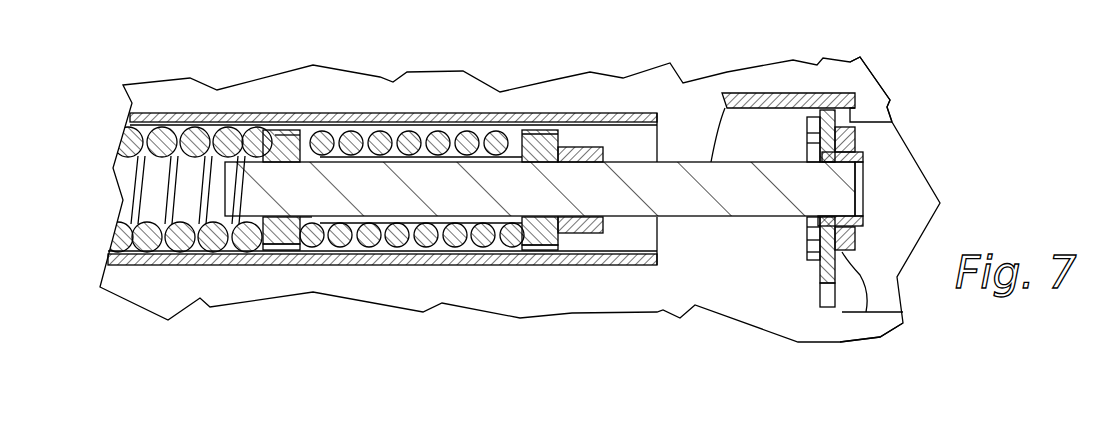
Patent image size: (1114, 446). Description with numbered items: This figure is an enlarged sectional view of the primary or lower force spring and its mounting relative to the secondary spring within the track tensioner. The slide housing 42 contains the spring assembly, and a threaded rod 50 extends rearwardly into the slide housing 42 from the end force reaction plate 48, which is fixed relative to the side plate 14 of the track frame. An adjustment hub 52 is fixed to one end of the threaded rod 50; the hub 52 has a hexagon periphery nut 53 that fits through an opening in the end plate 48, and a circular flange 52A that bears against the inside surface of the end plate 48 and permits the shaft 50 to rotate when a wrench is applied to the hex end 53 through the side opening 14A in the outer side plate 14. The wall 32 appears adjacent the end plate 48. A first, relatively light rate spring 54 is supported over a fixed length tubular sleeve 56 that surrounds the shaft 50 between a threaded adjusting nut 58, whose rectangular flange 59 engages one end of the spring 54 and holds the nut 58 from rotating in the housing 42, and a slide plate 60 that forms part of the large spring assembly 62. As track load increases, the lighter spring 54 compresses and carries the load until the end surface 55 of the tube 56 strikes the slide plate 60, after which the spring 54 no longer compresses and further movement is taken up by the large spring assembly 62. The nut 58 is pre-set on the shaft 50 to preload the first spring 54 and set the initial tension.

The side plate 14 is at (670, 277).
The side opening 14A is at (867, 290).
The mounting wall 32 is at (848, 92).
The slide housing 42 is at (380, 112).
The end force reaction plate 48 is at (820, 275).
The threaded rod 50 is at (662, 183).
The adjustment hub 52 is at (800, 244).
The circular flange 52A is at (807, 148).
The hexagon periphery nut 53 is at (863, 222).
The first spring 54 is at (468, 140).
The end surface 55 is at (313, 217).
The tubular sleeve 56 is at (490, 220).
The threaded adjusting nut 58 is at (562, 147).
The rectangular flange 59 is at (535, 145).
The slide plate 60 is at (281, 133).
The large spring assembly 62 is at (190, 130).